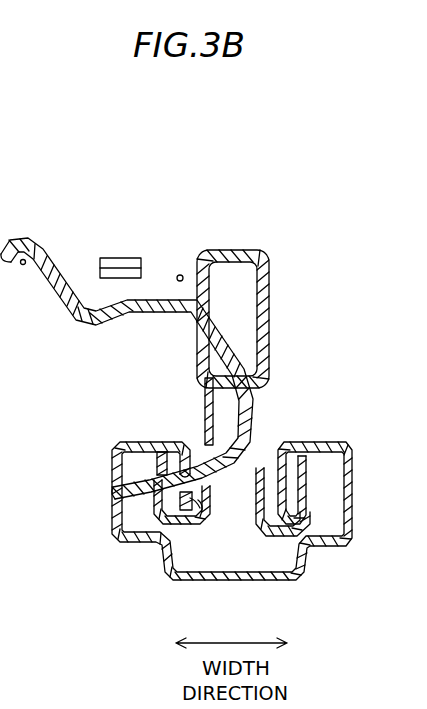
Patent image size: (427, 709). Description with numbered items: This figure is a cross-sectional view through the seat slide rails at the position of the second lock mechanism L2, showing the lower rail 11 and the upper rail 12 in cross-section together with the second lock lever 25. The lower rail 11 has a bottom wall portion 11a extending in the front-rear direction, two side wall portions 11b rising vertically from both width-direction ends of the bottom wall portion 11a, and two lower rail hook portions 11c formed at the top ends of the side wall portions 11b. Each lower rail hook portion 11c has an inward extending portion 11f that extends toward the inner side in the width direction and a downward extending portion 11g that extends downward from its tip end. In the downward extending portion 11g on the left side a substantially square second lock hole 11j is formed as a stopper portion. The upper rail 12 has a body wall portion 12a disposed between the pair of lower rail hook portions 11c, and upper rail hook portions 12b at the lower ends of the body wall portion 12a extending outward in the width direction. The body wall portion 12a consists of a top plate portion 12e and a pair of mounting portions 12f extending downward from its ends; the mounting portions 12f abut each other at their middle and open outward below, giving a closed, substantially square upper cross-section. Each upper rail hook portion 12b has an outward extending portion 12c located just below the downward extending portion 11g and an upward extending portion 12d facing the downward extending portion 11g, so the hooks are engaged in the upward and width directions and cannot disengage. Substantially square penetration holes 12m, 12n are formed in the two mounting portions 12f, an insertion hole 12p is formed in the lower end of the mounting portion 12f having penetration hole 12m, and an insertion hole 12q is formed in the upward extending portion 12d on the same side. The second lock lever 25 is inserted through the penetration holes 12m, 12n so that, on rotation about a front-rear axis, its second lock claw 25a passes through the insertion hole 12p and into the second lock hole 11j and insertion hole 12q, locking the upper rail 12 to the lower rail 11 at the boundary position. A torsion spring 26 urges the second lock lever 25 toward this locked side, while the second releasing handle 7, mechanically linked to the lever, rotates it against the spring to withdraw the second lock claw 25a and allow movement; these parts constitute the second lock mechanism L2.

The second lock lever 25 is at (30, 246).
The second lock claw 25a is at (115, 492).
The torsion spring 26 is at (23, 266).
The second releasing handle 7 is at (115, 258).
The second lock mechanism L2 is at (56, 349).
The upper rail 12 is at (193, 383).
The body wall portion 12a is at (197, 262).
The top plate portion 12e is at (236, 251).
The penetration hole 12n is at (270, 324).
The mounting portions 12f is at (270, 349).
The penetration hole 12m is at (176, 292).
The insertion hole 12p is at (207, 417).
The insertion hole 12q is at (118, 518).
The upper rail hook portions 12b is at (272, 541).
The outward extending portions 12c is at (173, 581).
The upward extending portions 12d is at (152, 529).
The lower rail 11 is at (215, 506).
The bottom wall portion 11a is at (272, 581).
The side wall portions 11b is at (112, 466).
The lower rail hook portions 11c is at (153, 442).
The inward extending portions 11f is at (134, 443).
The downward extending portions 11g is at (200, 517).
The second lock hole 11j is at (165, 452).